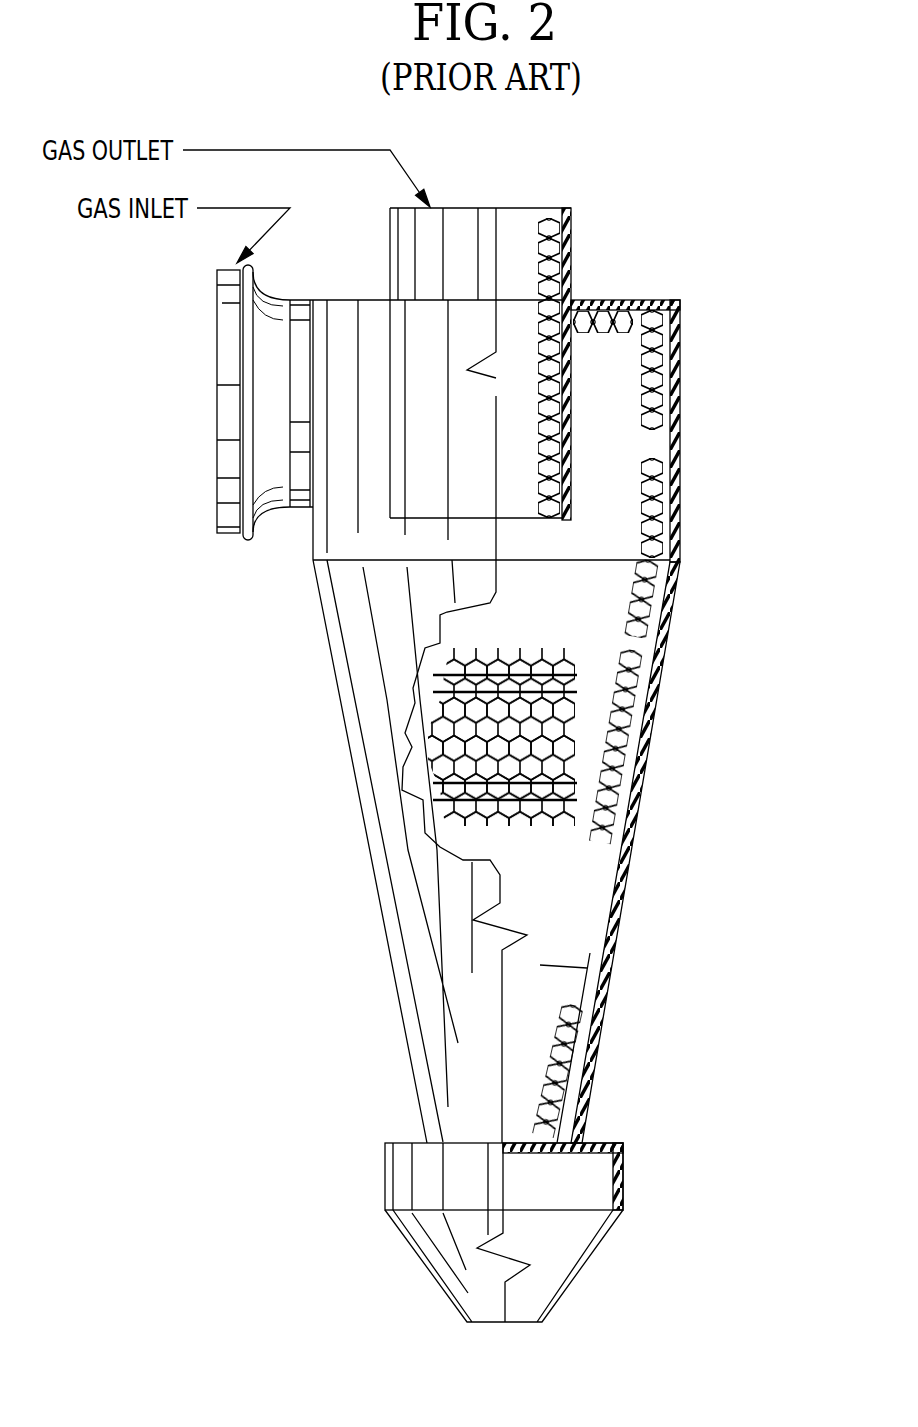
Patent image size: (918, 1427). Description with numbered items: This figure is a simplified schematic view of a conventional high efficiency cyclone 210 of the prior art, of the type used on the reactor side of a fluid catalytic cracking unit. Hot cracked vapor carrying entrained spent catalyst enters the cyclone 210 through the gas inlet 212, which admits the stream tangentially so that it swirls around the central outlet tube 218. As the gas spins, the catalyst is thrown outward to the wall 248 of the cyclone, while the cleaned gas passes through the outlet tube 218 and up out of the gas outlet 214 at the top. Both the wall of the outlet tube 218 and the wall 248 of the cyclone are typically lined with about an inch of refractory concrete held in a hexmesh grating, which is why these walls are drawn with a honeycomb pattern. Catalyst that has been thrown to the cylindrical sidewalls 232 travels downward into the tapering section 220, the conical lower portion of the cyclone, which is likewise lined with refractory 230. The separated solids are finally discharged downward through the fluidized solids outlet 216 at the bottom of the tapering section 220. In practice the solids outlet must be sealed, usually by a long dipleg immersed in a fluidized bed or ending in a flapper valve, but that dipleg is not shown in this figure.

The cyclone 210 is at (312, 557).
The gas inlet 212 is at (218, 470).
The gas outlet 214 is at (527, 206).
The fluidized solids outlet 216 is at (520, 1323).
The outlet tube 218 is at (570, 268).
The tapering section 220 is at (655, 713).
The refractory 230 is at (463, 857).
The cylindrical sidewalls 232 is at (682, 402).
The wall 248 is at (642, 497).